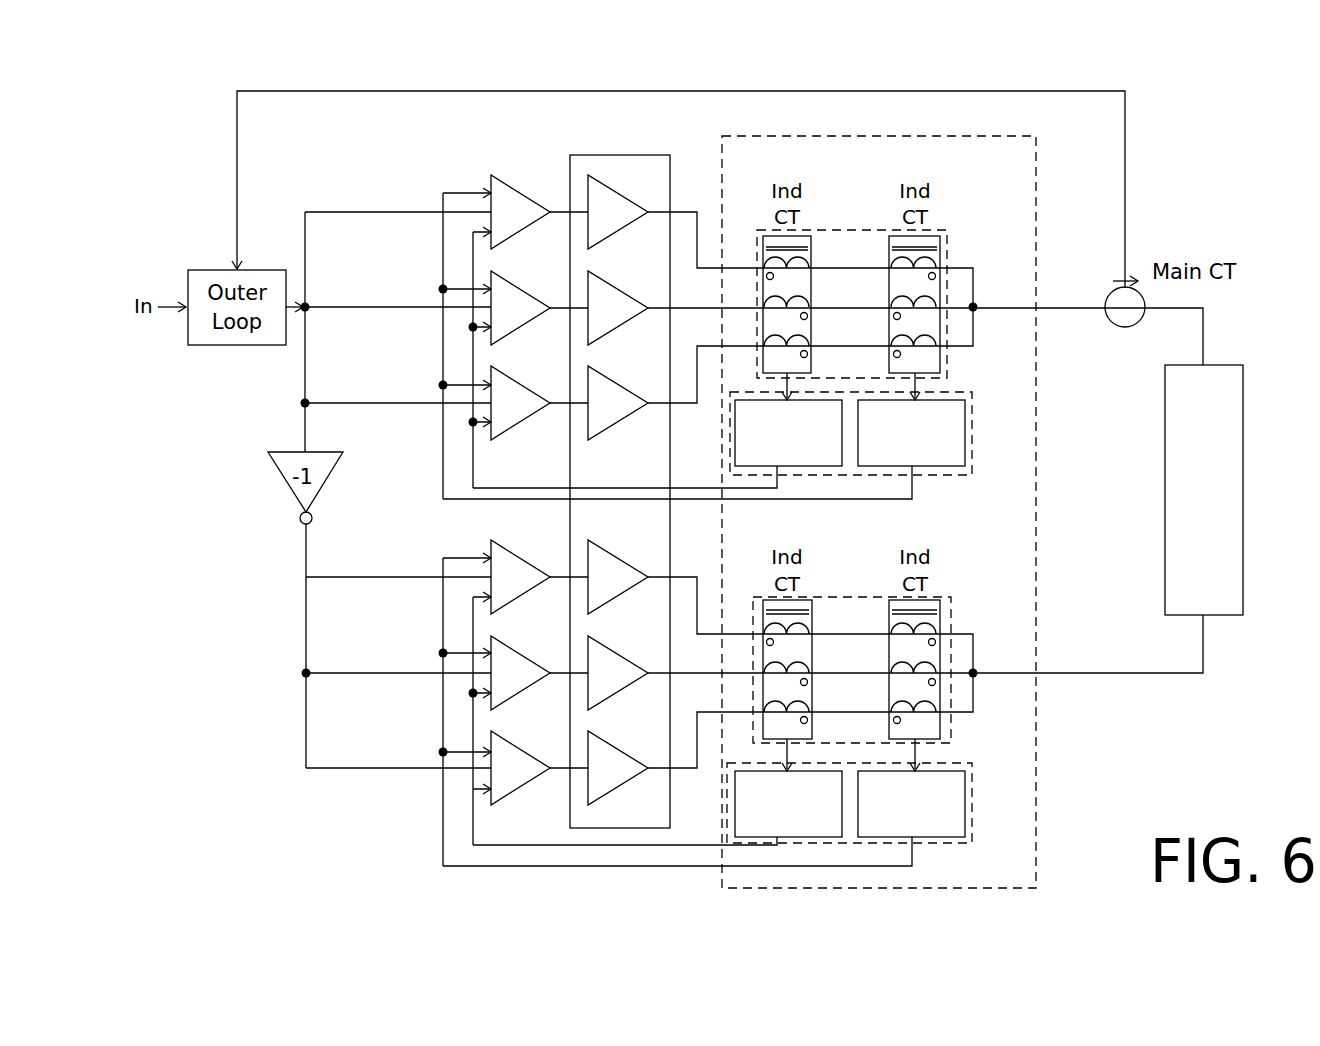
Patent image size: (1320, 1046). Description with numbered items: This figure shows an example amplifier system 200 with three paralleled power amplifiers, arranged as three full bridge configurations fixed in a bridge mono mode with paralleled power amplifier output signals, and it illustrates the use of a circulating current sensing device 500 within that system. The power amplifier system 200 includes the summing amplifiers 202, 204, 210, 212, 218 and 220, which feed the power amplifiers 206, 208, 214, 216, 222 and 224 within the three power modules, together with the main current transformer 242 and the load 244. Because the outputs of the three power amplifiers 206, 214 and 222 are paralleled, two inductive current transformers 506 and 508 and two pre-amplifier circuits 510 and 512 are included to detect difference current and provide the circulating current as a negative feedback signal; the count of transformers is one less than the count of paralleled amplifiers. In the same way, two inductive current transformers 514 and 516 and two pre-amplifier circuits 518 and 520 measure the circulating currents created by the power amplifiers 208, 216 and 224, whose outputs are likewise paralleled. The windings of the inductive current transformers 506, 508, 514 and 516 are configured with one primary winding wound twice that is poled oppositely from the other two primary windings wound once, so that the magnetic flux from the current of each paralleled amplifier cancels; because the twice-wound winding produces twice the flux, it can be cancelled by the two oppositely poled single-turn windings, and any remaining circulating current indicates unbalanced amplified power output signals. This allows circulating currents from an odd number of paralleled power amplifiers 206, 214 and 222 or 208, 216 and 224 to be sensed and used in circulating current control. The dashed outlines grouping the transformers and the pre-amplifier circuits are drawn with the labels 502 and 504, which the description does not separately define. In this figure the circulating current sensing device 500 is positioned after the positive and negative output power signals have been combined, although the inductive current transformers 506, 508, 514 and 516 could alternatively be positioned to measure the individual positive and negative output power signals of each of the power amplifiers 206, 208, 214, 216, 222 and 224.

The amplifier system 200 is at (1183, 126).
The summing amplifier 202 is at (505, 184).
The summing amplifier 204 is at (505, 549).
The power amplifier 206 is at (606, 183).
The power amplifier 208 is at (605, 550).
The summing amplifier 210 is at (505, 280).
The summing amplifier 212 is at (505, 645).
The power amplifier 214 is at (605, 280).
The power amplifier 216 is at (605, 646).
The summing amplifier 218 is at (505, 375).
The summing amplifier 220 is at (505, 740).
The power amplifier 222 is at (605, 376).
The power amplifier 224 is at (605, 741).
The main current transformer 242 is at (1122, 328).
The load 244 is at (1233, 365).
The circulating current sensing device 500 is at (1036, 181).
The inductive current transformer block 502 is at (947, 258).
The pre-amp circuit block 504 is at (972, 475).
The inductive current transformer 506 is at (811, 236).
The inductive current transformer 508 is at (940, 236).
The pre-amplifier circuit 510 is at (722, 426).
The pre-amplifier circuit 512 is at (965, 418).
The inductive current transformer 514 is at (812, 598).
The inductive current transformer 516 is at (940, 598).
The pre-amplifier circuit 518 is at (722, 773).
The pre-amplifier circuit 520 is at (950, 771).